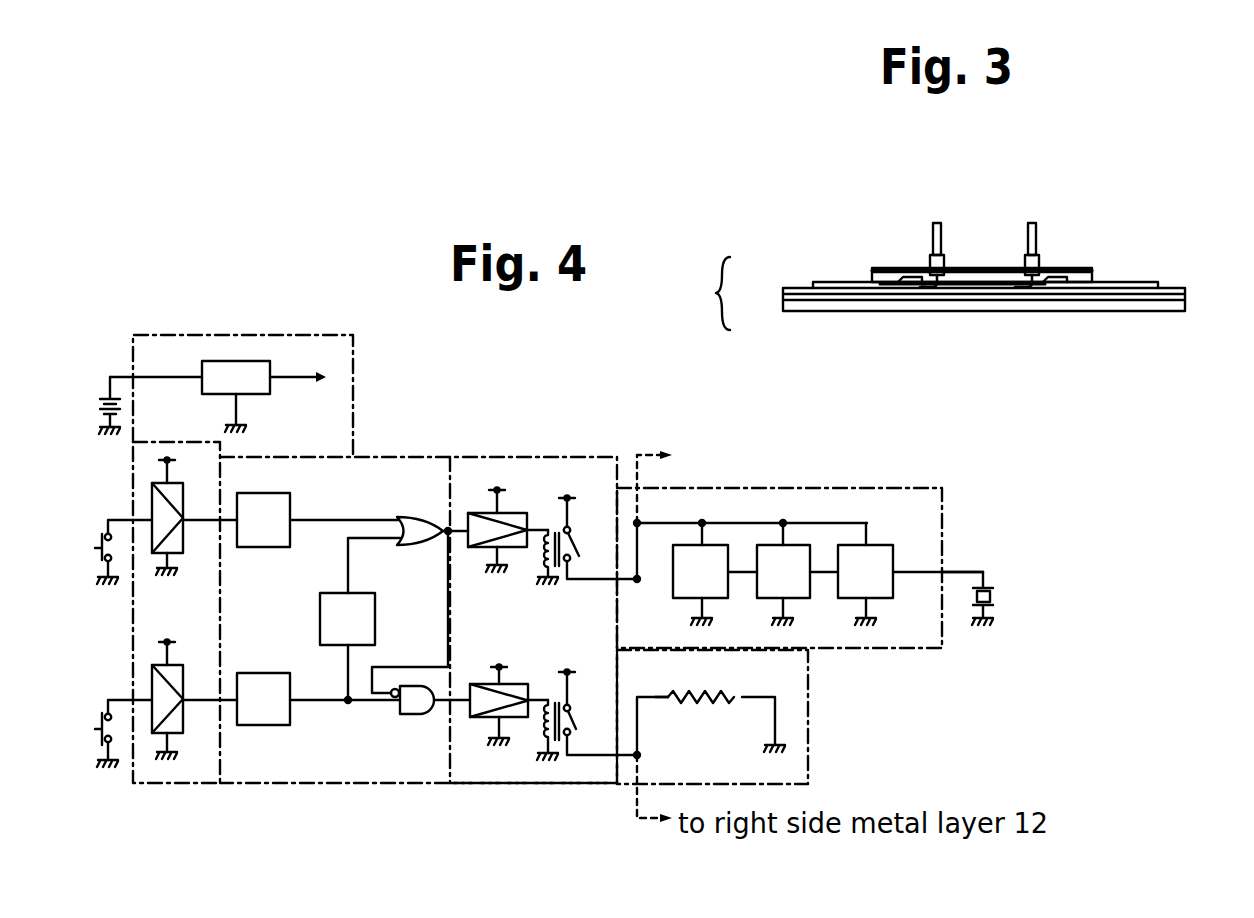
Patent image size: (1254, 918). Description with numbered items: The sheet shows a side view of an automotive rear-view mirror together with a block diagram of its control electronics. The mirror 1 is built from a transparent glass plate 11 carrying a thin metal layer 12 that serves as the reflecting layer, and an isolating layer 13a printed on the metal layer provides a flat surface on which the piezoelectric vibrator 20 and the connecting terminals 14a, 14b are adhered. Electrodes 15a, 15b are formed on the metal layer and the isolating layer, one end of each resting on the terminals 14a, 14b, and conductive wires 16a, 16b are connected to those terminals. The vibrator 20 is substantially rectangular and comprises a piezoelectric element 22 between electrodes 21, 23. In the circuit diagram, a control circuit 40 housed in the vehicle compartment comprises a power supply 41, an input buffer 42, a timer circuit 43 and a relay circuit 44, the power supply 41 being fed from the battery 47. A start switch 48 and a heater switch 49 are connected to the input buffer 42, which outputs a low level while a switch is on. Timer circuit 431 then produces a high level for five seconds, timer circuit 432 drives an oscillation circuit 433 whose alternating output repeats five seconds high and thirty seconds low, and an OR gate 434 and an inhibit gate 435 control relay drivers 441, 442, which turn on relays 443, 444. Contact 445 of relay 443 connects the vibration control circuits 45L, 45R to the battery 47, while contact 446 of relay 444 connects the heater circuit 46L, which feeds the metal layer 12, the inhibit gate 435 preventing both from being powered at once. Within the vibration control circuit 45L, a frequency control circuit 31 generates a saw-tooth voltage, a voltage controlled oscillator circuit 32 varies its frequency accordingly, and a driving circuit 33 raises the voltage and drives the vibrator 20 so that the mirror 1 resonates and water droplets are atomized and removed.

In FIG. 3, the mirror 1 is at (716, 293).
In FIG. 3, the transparent glass plate 11 is at (783, 303).
In FIG. 3, the thin metal layer 12 is at (787, 292).
In FIG. 4, the thin metal layer 12 is at (713, 702).
In FIG. 3, the isolating layer 13a is at (797, 290).
In FIG. 3, the connecting terminal 14a is at (925, 262).
In FIG. 3, the connecting terminal 14b is at (1035, 263).
In FIG. 3, the electrode 15a is at (833, 283).
In FIG. 3, the electrode 15b is at (1020, 277).
In FIG. 3, the conductive wire 16a is at (933, 225).
In FIG. 4, the conductive wire 16a is at (655, 697).
In FIG. 3, the conductive wire 16b is at (1035, 225).
In FIG. 4, the conductive wire 16b is at (773, 682).
In FIG. 3, the piezoelectric vibrator 20 is at (1103, 268).
In FIG. 4, the piezoelectric vibrator 20 is at (1003, 586).
In FIG. 4, the electrode 21 is at (960, 570).
In FIG. 4, the piezoelectric element 22 is at (987, 610).
In FIG. 3, the electrode 23 is at (1067, 270).
In FIG. 4, the frequency control circuit 31 is at (680, 598).
In FIG. 4, the voltage controlled oscillator circuit 32 is at (767, 598).
In FIG. 4, the driving circuit 33 is at (848, 598).
In FIG. 4, the control circuit 40 is at (530, 450).
In FIG. 4, the power supply 41 is at (275, 333).
In FIG. 4, the input buffer 42 is at (190, 783).
In FIG. 4, the timer circuit 43 is at (330, 783).
In FIG. 4, the relay circuit 44 is at (525, 783).
In FIG. 4, the vibration control circuit 45L is at (870, 488).
In FIG. 4, the vibration control circuit 45R is at (749, 456).
In FIG. 4, the heater circuit 46L is at (808, 728).
In FIG. 4, the battery 47 is at (98, 397).
In FIG. 4, the start switch 48 is at (100, 537).
In FIG. 4, the heater switch 49 is at (100, 720).
In FIG. 4, the timer circuit 431 is at (293, 505).
In FIG. 4, the timer circuit 432 is at (267, 726).
In FIG. 4, the oscillation circuit 433 is at (317, 615).
In FIG. 4, the OR gate 434 is at (413, 515).
In FIG. 4, the inhibit gate 435 is at (408, 716).
In FIG. 4, the relay driver 441 is at (482, 548).
In FIG. 4, the relay driver 442 is at (480, 720).
In FIG. 4, the relay 443 is at (557, 572).
In FIG. 4, the relay 444 is at (555, 742).
In FIG. 4, the contact 445 is at (578, 556).
In FIG. 4, the contact 446 is at (575, 725).